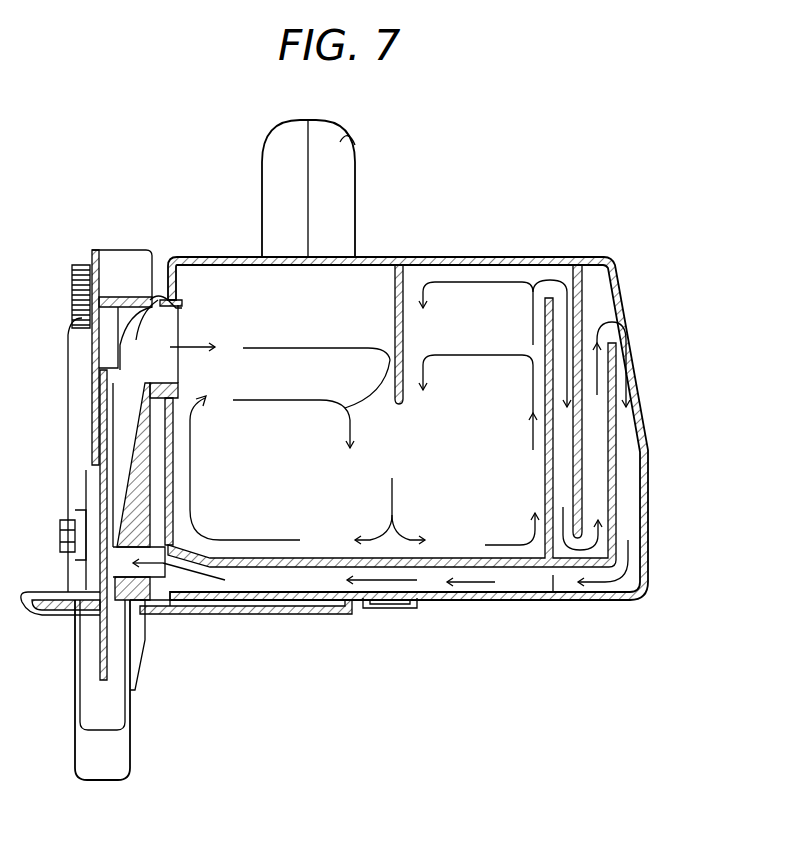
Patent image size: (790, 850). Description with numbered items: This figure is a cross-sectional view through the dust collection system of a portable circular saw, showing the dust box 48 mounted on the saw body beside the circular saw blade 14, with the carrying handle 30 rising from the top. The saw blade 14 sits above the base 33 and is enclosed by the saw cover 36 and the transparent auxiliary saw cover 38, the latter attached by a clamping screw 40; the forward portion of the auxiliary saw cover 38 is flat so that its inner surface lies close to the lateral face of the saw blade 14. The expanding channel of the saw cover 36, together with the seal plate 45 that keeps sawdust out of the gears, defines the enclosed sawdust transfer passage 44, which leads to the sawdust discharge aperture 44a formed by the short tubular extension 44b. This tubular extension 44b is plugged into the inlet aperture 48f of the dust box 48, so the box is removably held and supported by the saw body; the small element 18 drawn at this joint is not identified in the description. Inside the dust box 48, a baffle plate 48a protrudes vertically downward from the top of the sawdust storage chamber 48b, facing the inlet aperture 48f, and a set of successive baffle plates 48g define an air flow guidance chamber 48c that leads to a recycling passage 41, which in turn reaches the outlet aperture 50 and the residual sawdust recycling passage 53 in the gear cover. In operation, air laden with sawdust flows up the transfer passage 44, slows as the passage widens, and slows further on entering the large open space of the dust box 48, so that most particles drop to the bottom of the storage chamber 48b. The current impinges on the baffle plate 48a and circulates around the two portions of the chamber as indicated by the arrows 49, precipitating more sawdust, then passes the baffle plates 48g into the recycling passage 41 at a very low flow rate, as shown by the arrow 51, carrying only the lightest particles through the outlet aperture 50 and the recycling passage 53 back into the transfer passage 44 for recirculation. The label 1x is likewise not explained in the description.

The tube 1x is at (342, 142).
The circular saw blade 14 is at (98, 650).
The seal lip 18 is at (172, 303).
The carrying handle 30 is at (322, 134).
The base 33 is at (250, 614).
The saw cover 36 is at (115, 248).
The auxiliary saw cover 38 is at (68, 338).
The clamping screw 40 is at (75, 270).
The recycling passage 41 is at (553, 578).
The sawdust transfer passage 44 is at (123, 435).
The sawdust discharge aperture 44a is at (158, 318).
The tubular extension 44b is at (163, 302).
The seal plate 45 is at (100, 402).
The dust box 48 is at (449, 258).
The baffle plate 48a is at (394, 300).
The sawdust storage chamber 48b is at (443, 533).
The air flow guidance chamber 48c is at (560, 450).
The inlet aperture 48f is at (187, 305).
The baffle plates 48g is at (638, 335).
The arrows 49 is at (380, 373).
The outlet aperture 50 is at (212, 600).
The arrow 51 is at (475, 584).
The residual sawdust recycling passage 53 is at (143, 615).